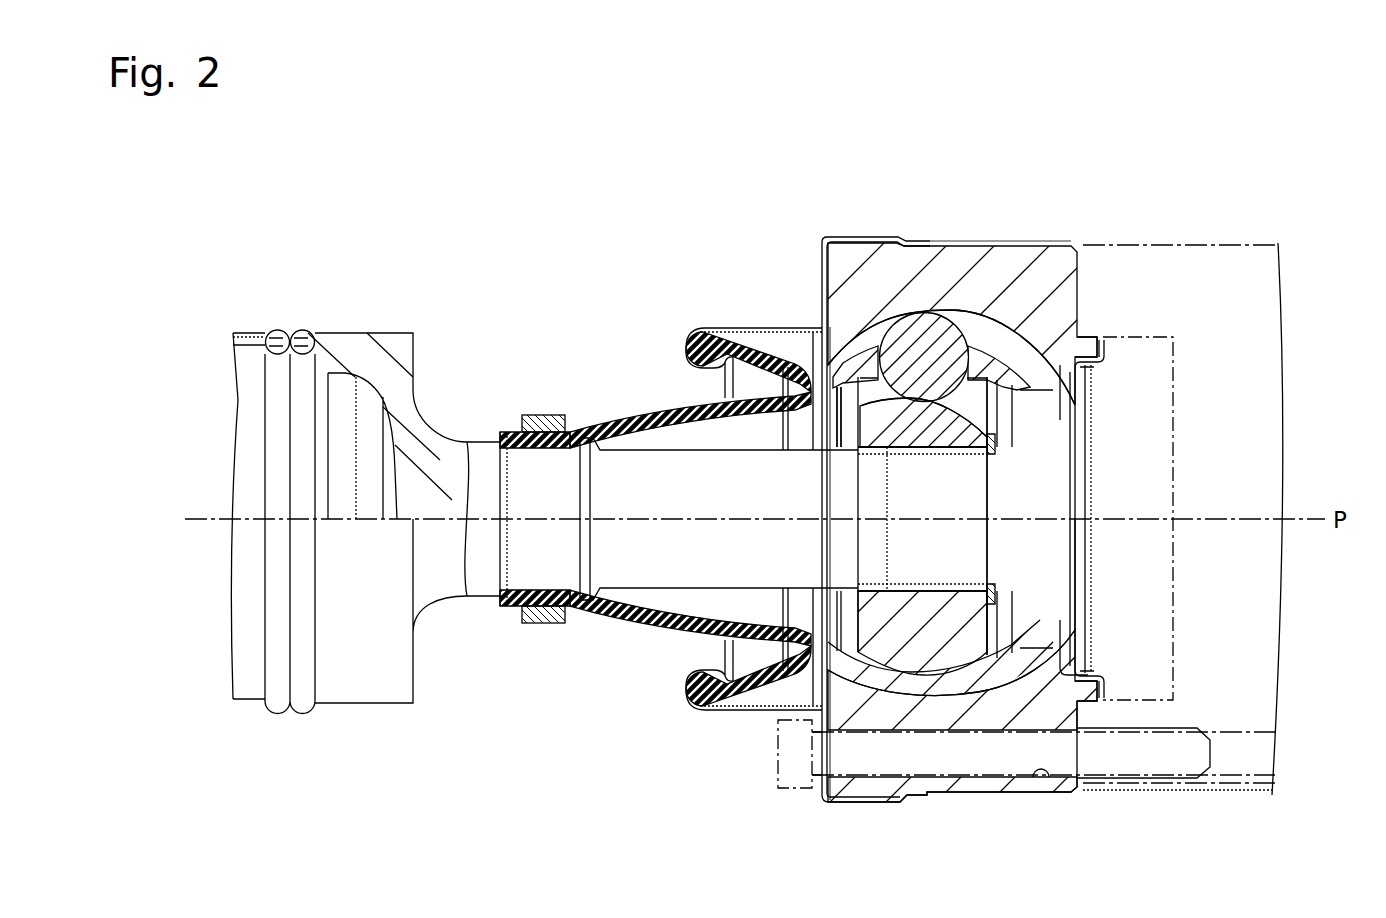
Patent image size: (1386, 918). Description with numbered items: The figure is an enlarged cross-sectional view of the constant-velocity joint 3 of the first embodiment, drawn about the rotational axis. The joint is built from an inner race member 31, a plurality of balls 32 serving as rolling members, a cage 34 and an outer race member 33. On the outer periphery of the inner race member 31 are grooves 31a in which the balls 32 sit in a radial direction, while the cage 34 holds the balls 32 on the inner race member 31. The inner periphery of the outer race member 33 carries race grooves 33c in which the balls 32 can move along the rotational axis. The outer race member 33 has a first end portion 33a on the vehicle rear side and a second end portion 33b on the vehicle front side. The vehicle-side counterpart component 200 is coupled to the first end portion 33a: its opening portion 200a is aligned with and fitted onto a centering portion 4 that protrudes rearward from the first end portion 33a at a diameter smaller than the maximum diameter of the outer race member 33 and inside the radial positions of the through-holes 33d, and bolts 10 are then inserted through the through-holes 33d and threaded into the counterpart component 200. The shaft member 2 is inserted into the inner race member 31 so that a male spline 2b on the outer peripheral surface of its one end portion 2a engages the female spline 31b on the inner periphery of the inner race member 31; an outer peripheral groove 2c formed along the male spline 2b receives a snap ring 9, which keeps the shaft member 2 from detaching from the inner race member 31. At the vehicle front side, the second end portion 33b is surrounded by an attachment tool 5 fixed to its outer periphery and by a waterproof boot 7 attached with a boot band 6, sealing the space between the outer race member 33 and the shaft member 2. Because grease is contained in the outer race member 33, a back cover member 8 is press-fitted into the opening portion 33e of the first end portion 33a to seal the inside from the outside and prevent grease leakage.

The shaft member 2 is at (350, 322).
The one end portion 2a is at (924, 604).
The male spline 2b is at (907, 570).
The outer peripheral groove 2c is at (985, 498).
The constant-velocity joint 3 is at (858, 218).
The centering portion 4 is at (1088, 338).
The attachment tool 5 is at (713, 329).
The boot band 6 is at (538, 417).
The waterproof boot 7 is at (618, 426).
The back cover member 8 is at (972, 407).
The snap ring 9 is at (990, 600).
The bolts 10 is at (805, 790).
The inner race member 31 is at (955, 655).
The grooves 31a is at (947, 447).
The female spline 31b is at (990, 462).
The balls 32 is at (913, 335).
The outer race member 33 is at (958, 258).
The first end portion 33a is at (1075, 250).
The second end portion 33b is at (835, 235).
The race grooves 33c is at (1010, 330).
The through-holes 33d is at (1033, 780).
The opening portion 33e is at (1058, 672).
The cage 34 is at (850, 362).
The vehicle-side counterpart component 200 is at (1228, 265).
The opening portion 200a is at (1145, 695).